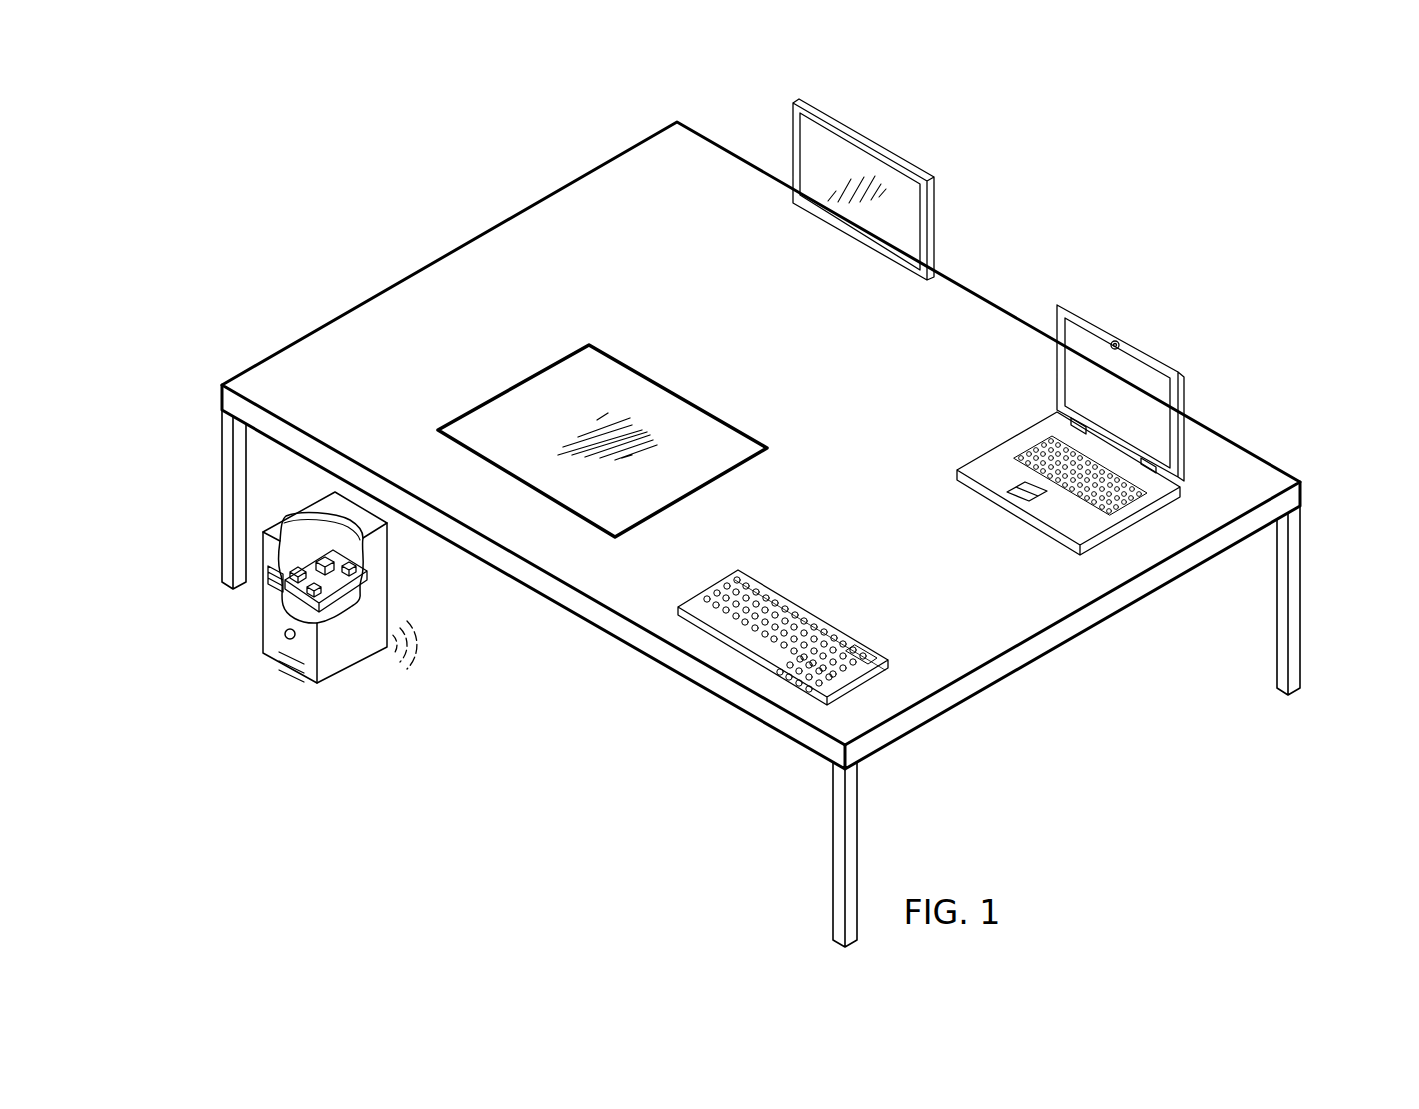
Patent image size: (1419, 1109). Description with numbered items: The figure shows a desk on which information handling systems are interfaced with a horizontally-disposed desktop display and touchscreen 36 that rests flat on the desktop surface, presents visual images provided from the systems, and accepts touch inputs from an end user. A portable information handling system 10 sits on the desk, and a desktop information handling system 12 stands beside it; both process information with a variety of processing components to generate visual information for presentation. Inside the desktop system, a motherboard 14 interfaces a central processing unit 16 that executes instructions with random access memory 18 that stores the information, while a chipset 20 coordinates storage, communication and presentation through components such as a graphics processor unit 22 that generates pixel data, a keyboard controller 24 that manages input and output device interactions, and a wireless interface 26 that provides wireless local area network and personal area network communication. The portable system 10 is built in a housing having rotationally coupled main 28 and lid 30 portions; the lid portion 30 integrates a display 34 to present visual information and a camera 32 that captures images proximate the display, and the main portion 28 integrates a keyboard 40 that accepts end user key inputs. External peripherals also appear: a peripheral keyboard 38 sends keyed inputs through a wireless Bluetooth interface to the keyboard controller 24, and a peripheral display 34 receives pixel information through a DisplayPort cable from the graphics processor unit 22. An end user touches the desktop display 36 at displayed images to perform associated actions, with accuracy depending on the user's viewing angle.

The portable information handling system 10 is at (1157, 404).
The desktop information handling system 12 is at (338, 601).
The motherboard 14 is at (329, 557).
The central processing unit 16 is at (293, 570).
The random access memory 18 is at (233, 499).
The chipset 20 is at (328, 552).
The graphics processor unit 22 is at (287, 612).
The keyboard controller 24 is at (350, 560).
The wireless interface 26 is at (422, 641).
The main portion 28 is at (1018, 518).
The lid portion 30 is at (1057, 328).
The camera 32 is at (1115, 344).
The display 34 is at (1206, 355).
The horizontally-disposed desktop display with touchscreen 36 is at (682, 396).
The peripheral keyboard 38 is at (812, 612).
The keyboard 40 is at (1030, 444).